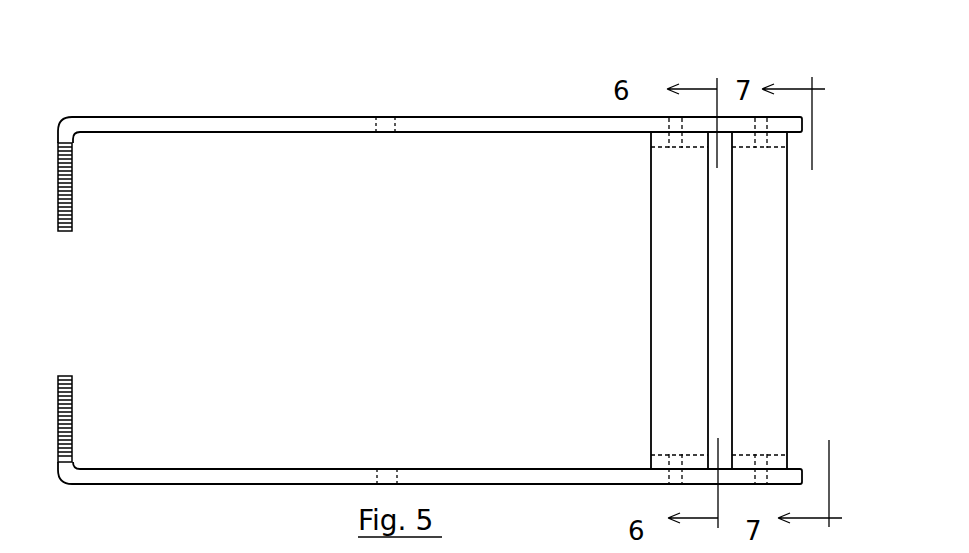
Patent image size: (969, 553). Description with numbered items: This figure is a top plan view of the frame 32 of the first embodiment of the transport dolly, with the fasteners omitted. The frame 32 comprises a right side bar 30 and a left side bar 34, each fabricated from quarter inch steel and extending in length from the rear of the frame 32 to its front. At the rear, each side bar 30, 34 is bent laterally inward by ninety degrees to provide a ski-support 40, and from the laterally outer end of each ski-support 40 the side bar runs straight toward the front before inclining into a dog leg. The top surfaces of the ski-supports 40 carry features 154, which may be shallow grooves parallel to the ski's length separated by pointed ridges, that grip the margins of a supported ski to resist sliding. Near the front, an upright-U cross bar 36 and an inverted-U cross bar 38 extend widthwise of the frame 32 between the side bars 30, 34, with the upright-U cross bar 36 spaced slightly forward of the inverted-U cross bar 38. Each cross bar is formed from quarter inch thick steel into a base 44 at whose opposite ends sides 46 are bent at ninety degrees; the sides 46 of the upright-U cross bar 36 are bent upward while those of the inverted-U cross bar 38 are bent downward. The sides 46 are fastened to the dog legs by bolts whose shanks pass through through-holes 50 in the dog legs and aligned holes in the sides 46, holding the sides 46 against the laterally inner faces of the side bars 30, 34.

The frame 32 is at (468, 76).
The left side bar 34 is at (268, 115).
The right side bar 30 is at (213, 468).
The ski-support 40 is at (103, 302).
The features 154 is at (66, 208).
The inverted-U cross bar 38 is at (651, 288).
The upright-U cross bar 36 is at (800, 301).
The base 44 is at (667, 361).
The sides 46 is at (777, 142).
The through-holes 50 is at (668, 117).